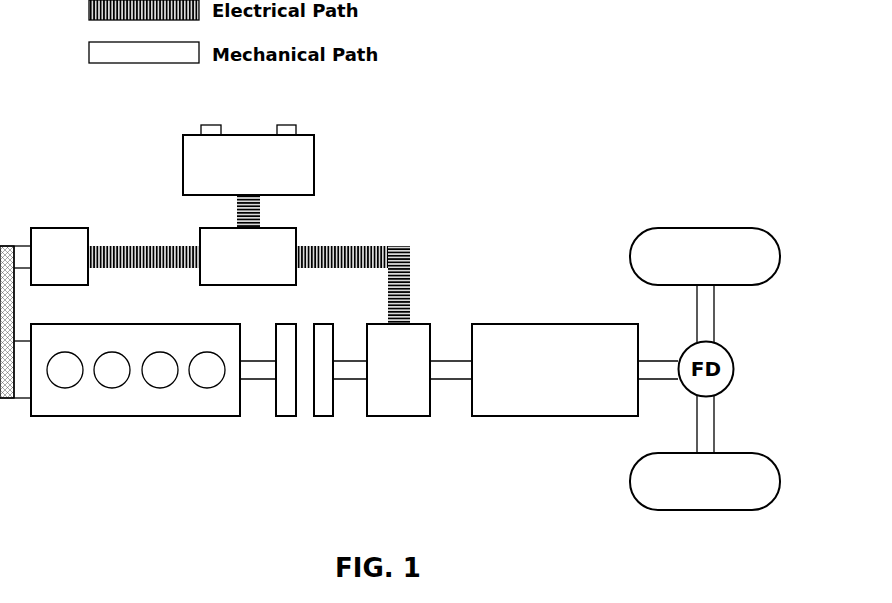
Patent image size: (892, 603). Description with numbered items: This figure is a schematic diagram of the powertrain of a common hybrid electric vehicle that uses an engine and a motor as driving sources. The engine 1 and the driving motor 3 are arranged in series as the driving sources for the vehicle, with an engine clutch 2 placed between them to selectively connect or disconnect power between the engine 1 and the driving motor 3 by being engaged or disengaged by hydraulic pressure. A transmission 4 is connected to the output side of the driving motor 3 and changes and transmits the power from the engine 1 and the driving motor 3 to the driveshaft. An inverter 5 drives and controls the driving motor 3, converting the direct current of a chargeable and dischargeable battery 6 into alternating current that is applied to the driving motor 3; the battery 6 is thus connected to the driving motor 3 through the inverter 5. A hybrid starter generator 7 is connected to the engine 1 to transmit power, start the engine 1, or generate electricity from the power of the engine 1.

The engine 1 is at (135, 416).
The engine clutch 2 is at (323, 416).
The driving motor 3 is at (397, 416).
The transmission 4 is at (538, 416).
The inverter 5 is at (297, 229).
The battery 6 is at (314, 163).
The hybrid starter generator (HSG) 7 is at (58, 228).